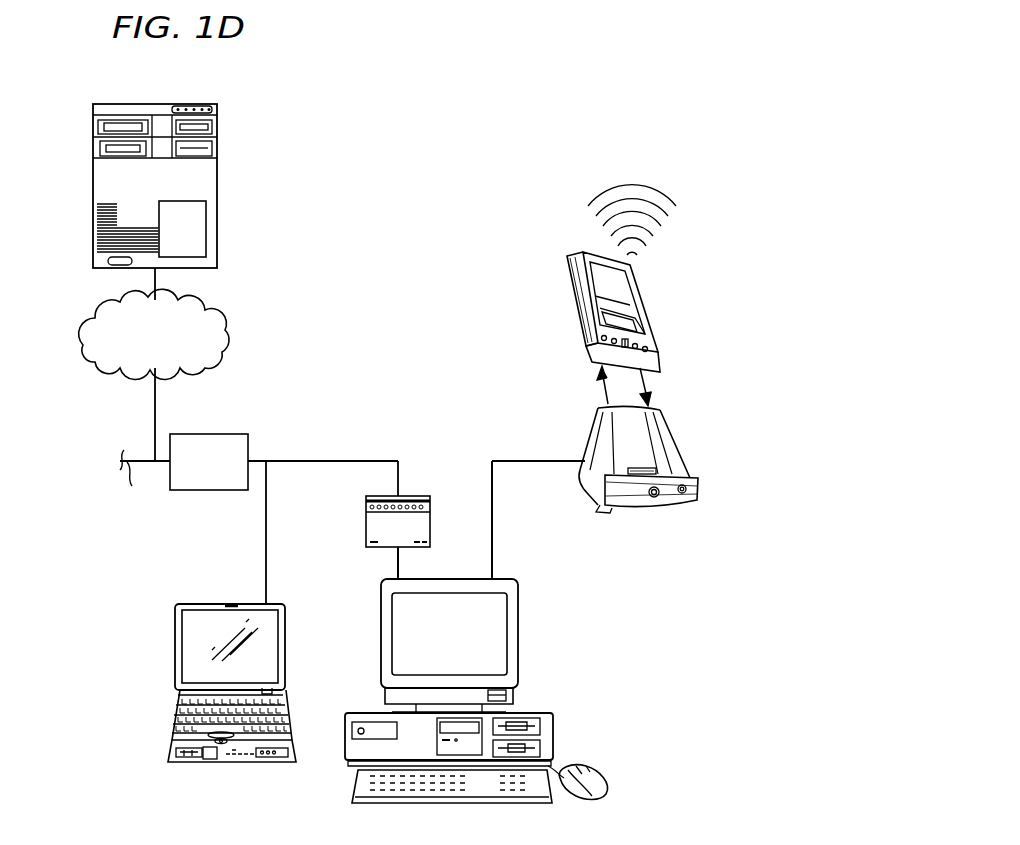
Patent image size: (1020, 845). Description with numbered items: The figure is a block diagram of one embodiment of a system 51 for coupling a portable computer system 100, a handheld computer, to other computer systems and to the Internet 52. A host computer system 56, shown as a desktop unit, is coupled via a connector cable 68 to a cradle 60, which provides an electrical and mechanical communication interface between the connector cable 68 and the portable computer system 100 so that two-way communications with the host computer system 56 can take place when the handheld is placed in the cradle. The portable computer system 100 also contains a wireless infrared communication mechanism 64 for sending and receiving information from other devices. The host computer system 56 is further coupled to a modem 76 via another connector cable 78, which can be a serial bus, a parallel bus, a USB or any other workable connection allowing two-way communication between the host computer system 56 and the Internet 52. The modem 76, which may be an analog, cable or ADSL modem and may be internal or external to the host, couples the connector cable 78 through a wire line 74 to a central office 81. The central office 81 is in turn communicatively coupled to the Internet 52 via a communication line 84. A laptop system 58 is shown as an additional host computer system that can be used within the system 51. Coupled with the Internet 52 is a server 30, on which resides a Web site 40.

The system 51 is at (329, 55).
The server 30 is at (92, 173).
The Web site 40 is at (206, 228).
The Internet 52 is at (84, 335).
The central office 81 is at (209, 434).
The communication line 84 is at (134, 470).
The wire line 74 is at (345, 460).
The modem 76 is at (366, 520).
The connector cable 78 is at (398, 561).
The connector cable 68 is at (492, 521).
The host computer system 56 is at (518, 630).
The laptop system 58 is at (175, 634).
The portable computer system 100 is at (576, 301).
The wireless infrared communication mechanism 64 is at (602, 219).
The cradle 60 is at (660, 507).